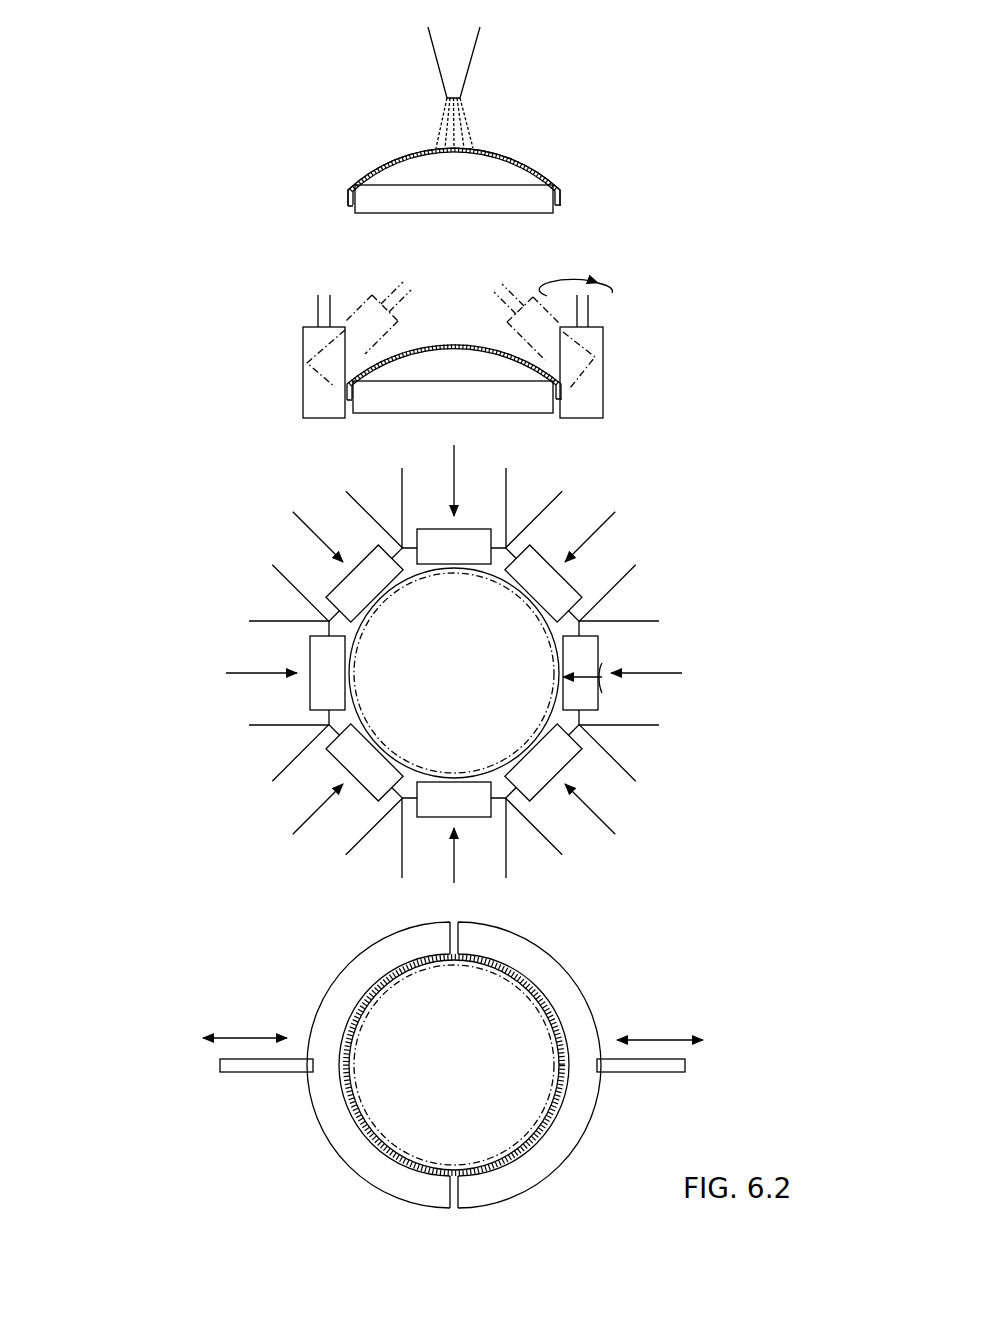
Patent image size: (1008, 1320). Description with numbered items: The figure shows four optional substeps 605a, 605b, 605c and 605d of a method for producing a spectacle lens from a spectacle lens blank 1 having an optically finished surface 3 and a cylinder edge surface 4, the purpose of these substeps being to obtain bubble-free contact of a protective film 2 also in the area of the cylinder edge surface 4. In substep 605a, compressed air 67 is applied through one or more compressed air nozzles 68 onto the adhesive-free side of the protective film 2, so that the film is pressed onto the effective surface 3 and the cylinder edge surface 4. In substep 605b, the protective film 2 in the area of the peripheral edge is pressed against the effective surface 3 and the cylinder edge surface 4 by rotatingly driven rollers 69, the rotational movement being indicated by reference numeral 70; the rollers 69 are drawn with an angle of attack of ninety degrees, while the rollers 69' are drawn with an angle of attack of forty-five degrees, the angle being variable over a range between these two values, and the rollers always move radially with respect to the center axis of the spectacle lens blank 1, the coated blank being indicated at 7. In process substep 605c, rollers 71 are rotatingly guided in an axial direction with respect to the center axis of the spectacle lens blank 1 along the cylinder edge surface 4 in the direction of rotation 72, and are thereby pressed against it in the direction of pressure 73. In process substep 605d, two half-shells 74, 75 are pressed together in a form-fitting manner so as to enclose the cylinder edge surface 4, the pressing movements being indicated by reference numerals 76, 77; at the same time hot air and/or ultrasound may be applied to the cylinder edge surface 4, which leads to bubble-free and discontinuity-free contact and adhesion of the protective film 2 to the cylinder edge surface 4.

The substep 605a is at (305, 178).
The substep 605b is at (252, 343).
The process substep 605c is at (230, 531).
The process substep 605d is at (230, 928).
The compressed air nozzle 68 is at (462, 56).
The compressed air 67 is at (462, 128).
The optically finished surface 3 is at (525, 167).
The protective film 2 is at (543, 177).
The spectacle lens blank 1 is at (350, 208).
The cylinder edge surface 4 is at (553, 208).
The coated workpiece 7 is at (563, 395).
The roller 69 is at (610, 356).
The roller 69' is at (452, 303).
The rotational movement 70 is at (612, 293).
The roller 71 is at (558, 592).
The direction of rotation 72 is at (602, 680).
The direction of pressure 73 is at (597, 523).
The half-shell 74 is at (357, 973).
The half-shell 75 is at (550, 972).
The pressing movement of half-shell 76 is at (243, 1038).
The pressing movement of half-shell 77 is at (660, 1040).